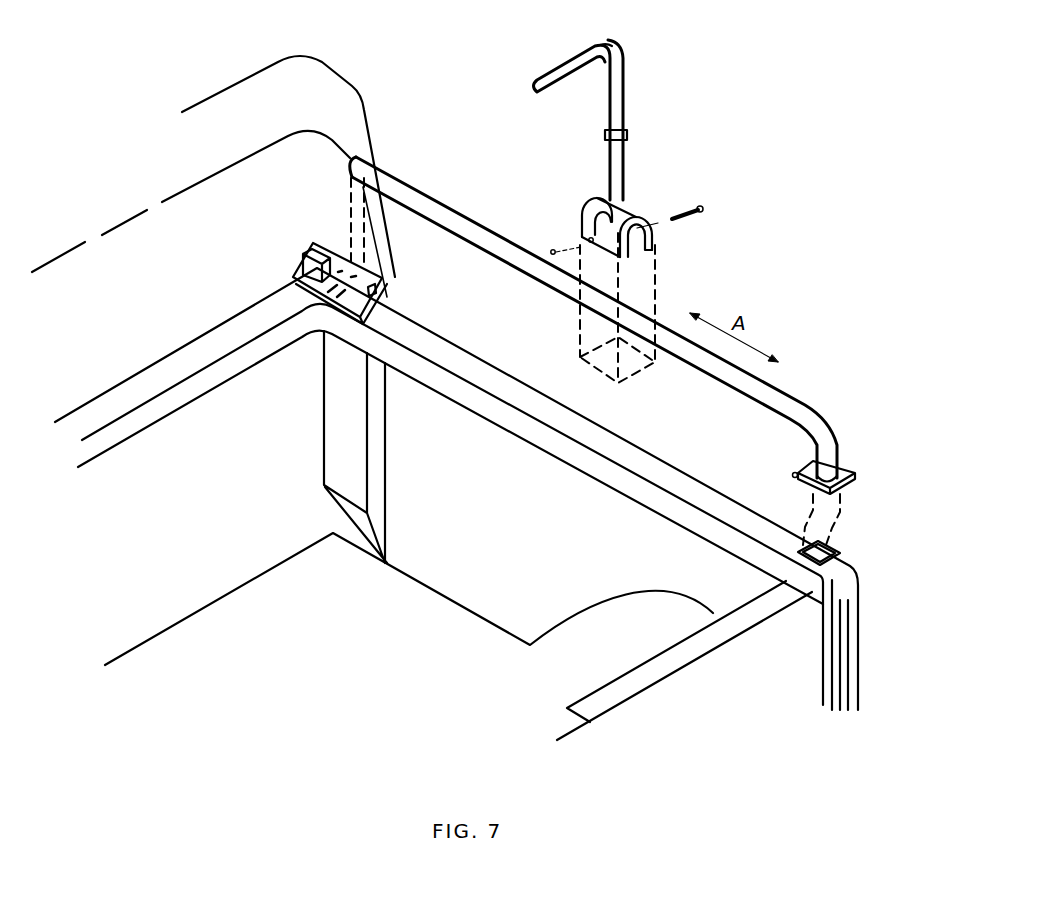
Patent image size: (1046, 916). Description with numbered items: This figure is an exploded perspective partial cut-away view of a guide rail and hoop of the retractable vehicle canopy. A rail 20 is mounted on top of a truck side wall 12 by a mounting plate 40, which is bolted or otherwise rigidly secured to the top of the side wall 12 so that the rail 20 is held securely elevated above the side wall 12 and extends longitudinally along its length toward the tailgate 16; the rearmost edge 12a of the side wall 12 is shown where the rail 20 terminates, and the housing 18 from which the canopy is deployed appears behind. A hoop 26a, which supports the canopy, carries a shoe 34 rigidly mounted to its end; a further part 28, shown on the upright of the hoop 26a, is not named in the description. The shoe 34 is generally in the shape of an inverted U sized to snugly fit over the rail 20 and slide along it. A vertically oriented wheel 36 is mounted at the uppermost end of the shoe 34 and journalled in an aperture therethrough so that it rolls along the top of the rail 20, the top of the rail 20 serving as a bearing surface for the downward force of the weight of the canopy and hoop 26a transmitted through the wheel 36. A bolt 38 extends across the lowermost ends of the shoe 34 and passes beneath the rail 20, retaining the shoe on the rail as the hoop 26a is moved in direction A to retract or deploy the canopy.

The side wall 12 is at (480, 373).
The rearmost edge 12a is at (847, 572).
The tailgate 16 is at (777, 682).
The housing 18 is at (310, 85).
The rail 20 is at (770, 395).
The hoop 26a is at (617, 85).
The pin 28 is at (628, 135).
The shoe 34 is at (647, 237).
The wheel 36 is at (640, 200).
The bolt 38 is at (680, 222).
The mounting plate 40 is at (400, 265).